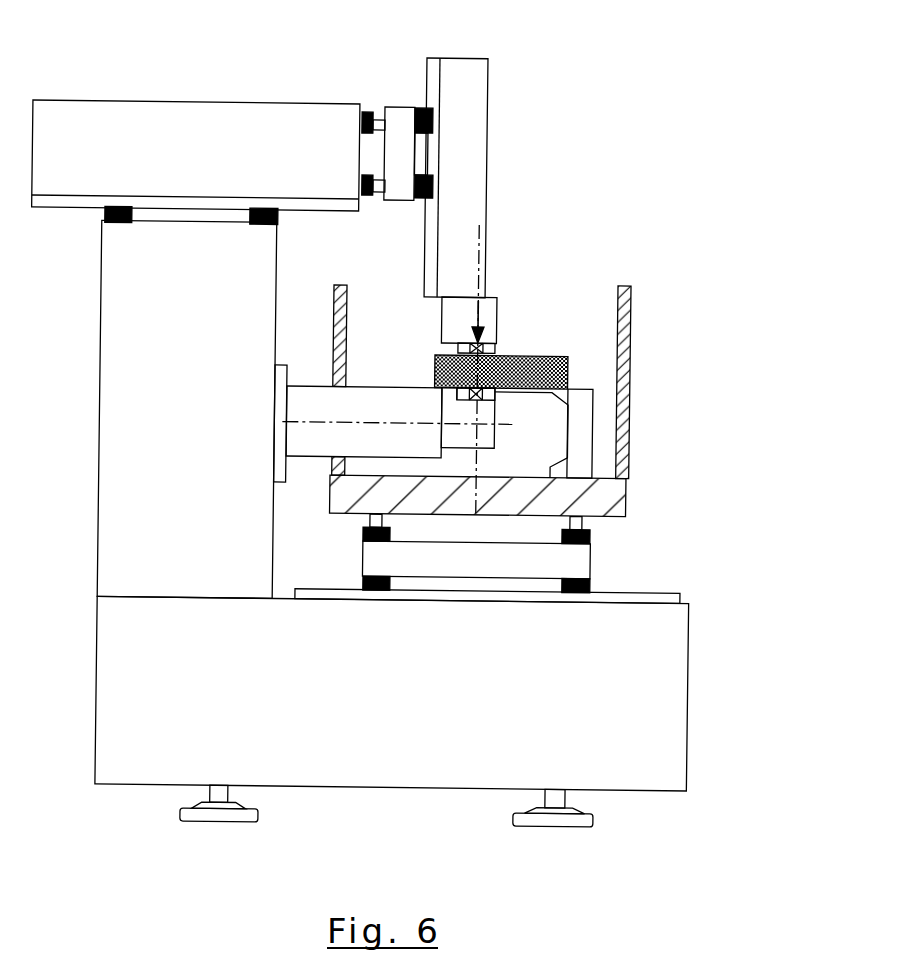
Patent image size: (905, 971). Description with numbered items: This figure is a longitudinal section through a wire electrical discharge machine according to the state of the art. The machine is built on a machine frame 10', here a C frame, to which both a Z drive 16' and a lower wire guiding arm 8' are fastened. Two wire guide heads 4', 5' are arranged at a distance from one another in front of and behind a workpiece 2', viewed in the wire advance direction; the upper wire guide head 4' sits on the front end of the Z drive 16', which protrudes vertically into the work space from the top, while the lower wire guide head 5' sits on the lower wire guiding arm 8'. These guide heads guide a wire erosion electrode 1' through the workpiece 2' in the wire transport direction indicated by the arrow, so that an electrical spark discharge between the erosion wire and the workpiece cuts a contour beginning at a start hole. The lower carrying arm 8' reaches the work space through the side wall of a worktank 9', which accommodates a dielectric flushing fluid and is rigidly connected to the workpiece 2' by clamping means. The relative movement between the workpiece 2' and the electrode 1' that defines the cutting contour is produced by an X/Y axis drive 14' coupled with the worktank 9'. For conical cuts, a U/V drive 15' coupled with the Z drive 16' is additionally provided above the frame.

The wire erosion electrode 1' is at (511, 370).
The workpiece 2' is at (574, 355).
The upper wire guide head 4' is at (512, 330).
The lower wire guide head 5' is at (496, 419).
The lower wire guiding arm 8' is at (394, 398).
The worktank 9' is at (526, 399).
The machine frame 10' is at (357, 516).
The X/Y axis drive 14' is at (492, 558).
The U/V drive 15' is at (233, 116).
The Z drive 16' is at (510, 178).